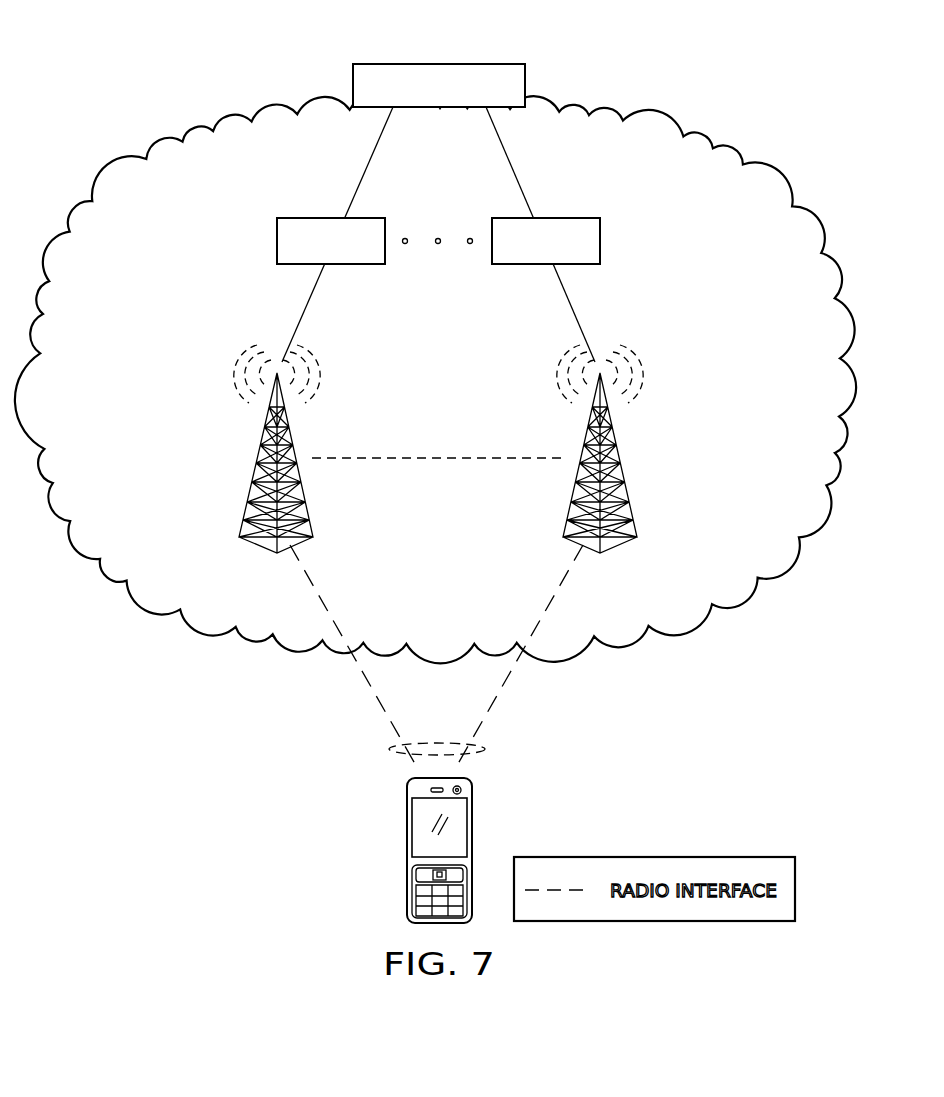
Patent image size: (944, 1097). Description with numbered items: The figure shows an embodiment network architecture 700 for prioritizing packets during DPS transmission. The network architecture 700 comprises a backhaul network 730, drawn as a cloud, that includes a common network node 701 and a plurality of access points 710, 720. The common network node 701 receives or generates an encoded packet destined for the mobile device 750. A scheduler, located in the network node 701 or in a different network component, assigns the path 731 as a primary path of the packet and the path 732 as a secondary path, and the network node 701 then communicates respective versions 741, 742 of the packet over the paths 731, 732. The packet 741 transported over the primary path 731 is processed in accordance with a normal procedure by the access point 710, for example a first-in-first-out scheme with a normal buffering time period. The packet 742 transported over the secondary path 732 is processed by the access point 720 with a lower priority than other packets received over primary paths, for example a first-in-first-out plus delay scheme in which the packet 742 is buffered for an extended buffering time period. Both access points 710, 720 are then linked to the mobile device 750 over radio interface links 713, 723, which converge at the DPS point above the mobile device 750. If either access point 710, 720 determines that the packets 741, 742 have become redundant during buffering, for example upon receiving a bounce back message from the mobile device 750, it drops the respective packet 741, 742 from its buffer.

The network architecture 700 is at (648, 66).
The common network node 701 is at (433, 64).
The access point 710 is at (251, 479).
The access point 720 is at (626, 479).
The first radio interface link 713 is at (376, 690).
The second radio interface link 723 is at (501, 690).
The backhaul network 730 is at (183, 126).
The primary path 731 is at (364, 162).
The secondary path 732 is at (513, 162).
The packet 741 is at (277, 242).
The packet 742 is at (600, 242).
The mobile device 750 is at (407, 855).
The DPS transmission DPS is at (381, 759).